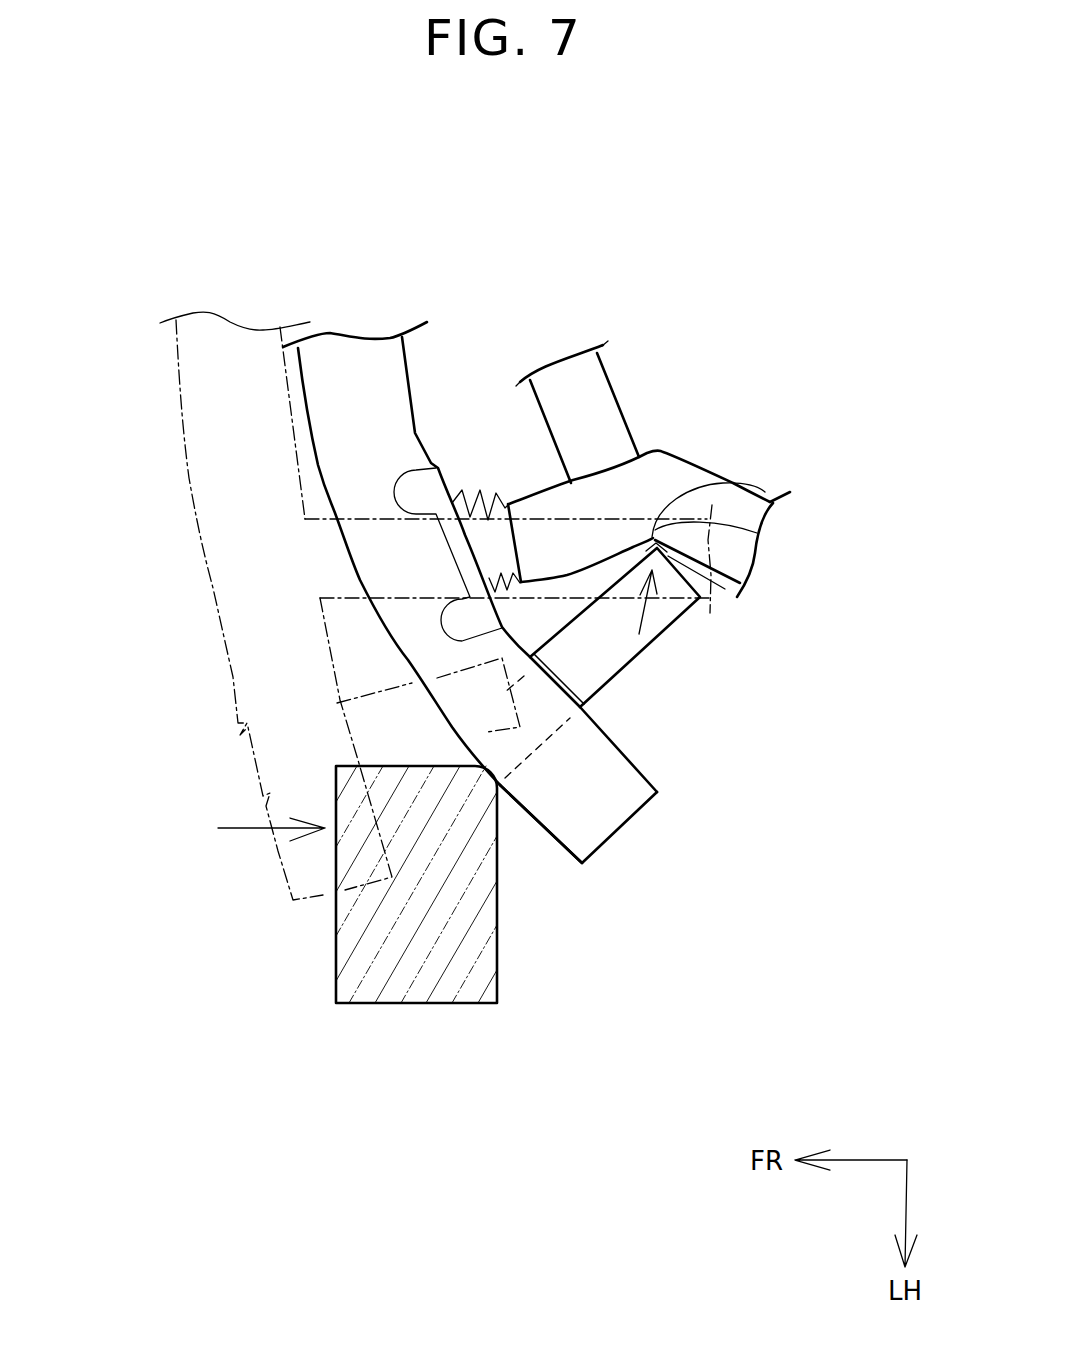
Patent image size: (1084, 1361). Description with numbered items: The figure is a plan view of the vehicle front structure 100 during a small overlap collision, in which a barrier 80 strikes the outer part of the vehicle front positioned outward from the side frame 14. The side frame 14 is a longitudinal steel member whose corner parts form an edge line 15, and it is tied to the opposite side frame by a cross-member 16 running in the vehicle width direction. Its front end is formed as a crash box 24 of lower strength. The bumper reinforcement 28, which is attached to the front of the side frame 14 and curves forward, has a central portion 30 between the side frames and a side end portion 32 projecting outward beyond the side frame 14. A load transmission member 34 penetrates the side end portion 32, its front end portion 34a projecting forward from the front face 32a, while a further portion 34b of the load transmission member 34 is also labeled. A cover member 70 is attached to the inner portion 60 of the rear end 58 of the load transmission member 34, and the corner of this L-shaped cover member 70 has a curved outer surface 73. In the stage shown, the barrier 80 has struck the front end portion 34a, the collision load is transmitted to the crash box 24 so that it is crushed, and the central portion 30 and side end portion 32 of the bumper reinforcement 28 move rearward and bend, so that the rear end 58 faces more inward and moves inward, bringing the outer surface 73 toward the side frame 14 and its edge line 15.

The vehicle front structure 100 is at (858, 260).
The side frame 14 is at (705, 463).
The edge line 15 is at (740, 487).
The cross-member 16 is at (613, 393).
The crash box 24 is at (480, 490).
The bumper reinforcement 28 is at (443, 367).
The central portion 30 is at (313, 455).
The side end portion 32 is at (583, 818).
The front face 32a is at (547, 833).
The load transmission member 34 is at (633, 663).
The front end portion 34a is at (462, 730).
The second bracket portion 34b is at (630, 762).
The rear end 58 is at (700, 577).
The inner portion 60 is at (650, 568).
The cover member 70 is at (673, 577).
The outer surface 73 is at (653, 540).
The barrier 80 is at (384, 1003).